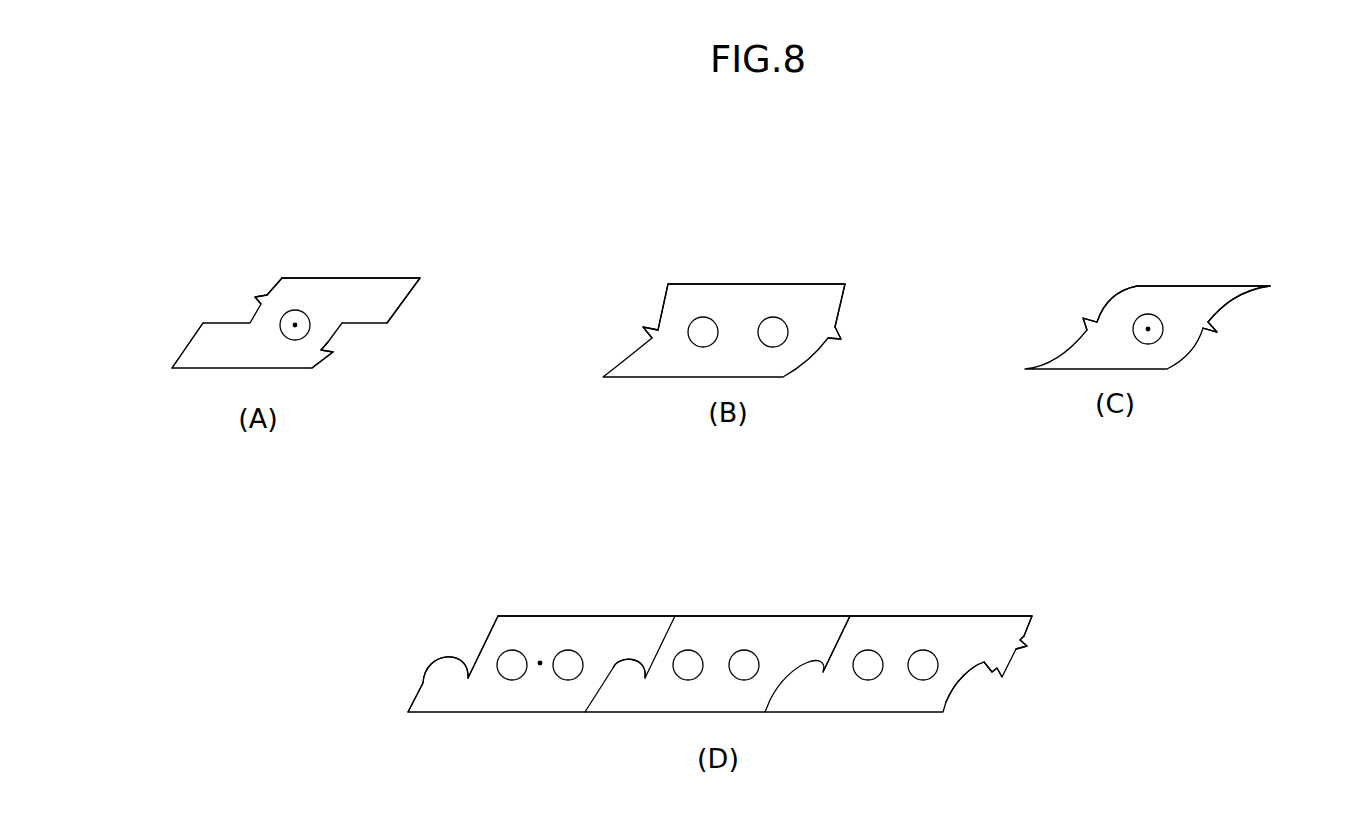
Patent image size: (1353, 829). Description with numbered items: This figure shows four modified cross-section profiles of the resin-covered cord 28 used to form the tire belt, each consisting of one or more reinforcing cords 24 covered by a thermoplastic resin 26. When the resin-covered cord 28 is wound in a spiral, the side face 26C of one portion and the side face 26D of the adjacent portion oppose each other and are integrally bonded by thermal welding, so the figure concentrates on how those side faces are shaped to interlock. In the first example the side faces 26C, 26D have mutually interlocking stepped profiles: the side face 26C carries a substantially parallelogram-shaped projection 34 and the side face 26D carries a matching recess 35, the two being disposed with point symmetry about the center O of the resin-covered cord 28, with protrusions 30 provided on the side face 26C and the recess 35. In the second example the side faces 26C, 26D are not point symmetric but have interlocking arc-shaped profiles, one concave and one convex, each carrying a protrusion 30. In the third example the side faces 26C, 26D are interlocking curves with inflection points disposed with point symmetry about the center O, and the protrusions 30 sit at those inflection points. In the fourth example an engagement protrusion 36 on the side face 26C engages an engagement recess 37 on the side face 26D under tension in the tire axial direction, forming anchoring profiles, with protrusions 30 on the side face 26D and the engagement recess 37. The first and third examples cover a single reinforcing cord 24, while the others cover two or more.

The reinforcing cord 24 is at (297, 310).
The thermoplastic resin 26 is at (290, 278).
The side face 26C is at (275, 287).
The side face 26D is at (413, 288).
The resin-covered cord 28 is at (358, 249).
The protrusion 30 is at (257, 299).
The projection 34 is at (186, 348).
The recess 35 is at (318, 365).
The engagement protrusion 36 is at (427, 677).
The engagement recess 37 is at (613, 673).
The center O is at (293, 327).